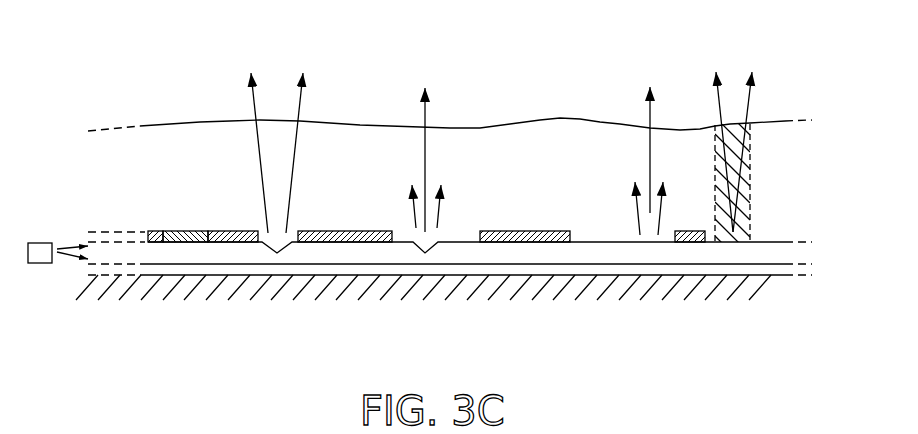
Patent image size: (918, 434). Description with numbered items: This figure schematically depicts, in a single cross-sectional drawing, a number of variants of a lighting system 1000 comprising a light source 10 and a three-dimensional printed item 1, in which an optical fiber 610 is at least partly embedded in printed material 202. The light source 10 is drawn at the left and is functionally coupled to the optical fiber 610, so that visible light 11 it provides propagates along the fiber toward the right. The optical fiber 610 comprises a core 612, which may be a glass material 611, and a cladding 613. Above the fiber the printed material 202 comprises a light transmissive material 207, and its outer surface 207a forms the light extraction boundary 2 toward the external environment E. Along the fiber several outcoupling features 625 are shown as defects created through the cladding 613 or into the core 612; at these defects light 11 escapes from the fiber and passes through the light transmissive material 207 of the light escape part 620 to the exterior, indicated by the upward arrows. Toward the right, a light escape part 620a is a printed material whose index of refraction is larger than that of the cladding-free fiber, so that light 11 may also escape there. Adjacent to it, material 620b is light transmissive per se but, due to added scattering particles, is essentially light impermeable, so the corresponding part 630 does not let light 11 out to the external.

The 3D item 1 is at (523, 103).
The light extraction surface 2 is at (195, 121).
The light source 10 is at (32, 263).
The visible light 11 is at (72, 258).
The 3D printed material 202 is at (665, 292).
The light transmissive material 207 is at (367, 157).
The surface of encapsulation layer 207a is at (588, 131).
The optical fiber 610 is at (202, 281).
The glass material 611 is at (450, 287).
The core 612 is at (322, 252).
The cladding 613 is at (563, 268).
The light escape part 620 is at (170, 183).
The light escape part 620a is at (727, 133).
The light impermeable material 620b is at (760, 258).
The outcoupling feature 625 is at (259, 228).
The part 630 is at (762, 175).
The lighting system 1000 is at (630, 45).
The external environment E is at (153, 102).